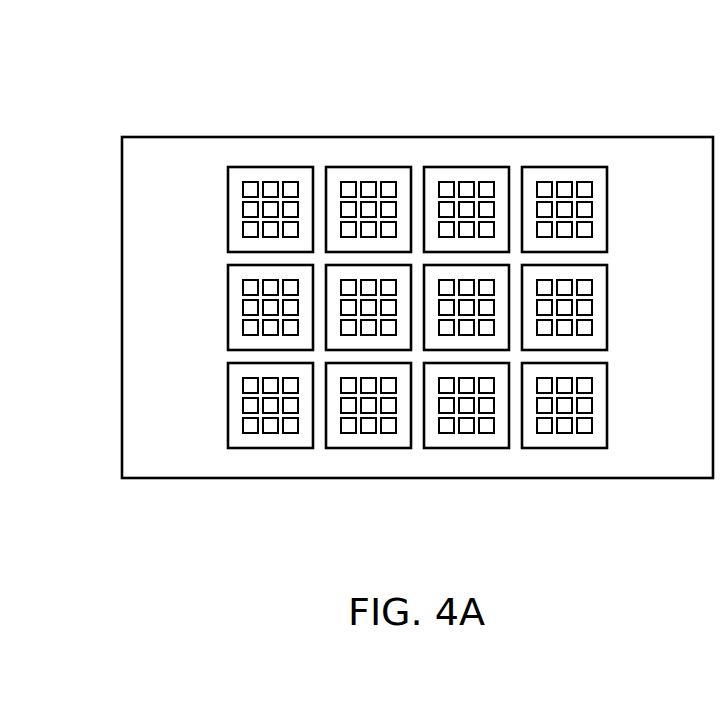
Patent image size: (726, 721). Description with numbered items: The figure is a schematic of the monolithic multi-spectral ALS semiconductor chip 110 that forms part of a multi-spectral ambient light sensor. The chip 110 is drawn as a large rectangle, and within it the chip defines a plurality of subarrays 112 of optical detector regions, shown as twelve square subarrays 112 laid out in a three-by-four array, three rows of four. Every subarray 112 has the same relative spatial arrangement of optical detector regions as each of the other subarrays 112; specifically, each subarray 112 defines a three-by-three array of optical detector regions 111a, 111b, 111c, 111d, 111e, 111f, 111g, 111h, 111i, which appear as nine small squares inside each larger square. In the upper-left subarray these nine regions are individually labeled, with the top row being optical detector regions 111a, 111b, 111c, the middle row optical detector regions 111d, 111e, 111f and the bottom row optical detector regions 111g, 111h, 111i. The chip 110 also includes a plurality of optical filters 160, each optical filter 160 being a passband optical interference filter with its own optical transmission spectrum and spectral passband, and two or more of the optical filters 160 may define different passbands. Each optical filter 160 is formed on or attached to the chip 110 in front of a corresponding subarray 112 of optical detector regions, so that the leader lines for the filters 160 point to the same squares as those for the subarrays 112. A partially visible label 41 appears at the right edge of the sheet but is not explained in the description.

The monolithic multi-spectral ALS semiconductor chip 110 is at (122, 457).
The subarray 112 is at (268, 155).
The optical filter 160 is at (498, 167).
The optical detector region 111a is at (250, 190).
The optical detector region 111b is at (271, 189).
The optical detector region 111c is at (291, 190).
The optical detector region 111d is at (250, 210).
The optical detector region 111e is at (270, 210).
The optical detector region 111f is at (292, 210).
The optical detector region 111g is at (250, 230).
The optical detector region 111h is at (272, 229).
The optical detector region 111i is at (297, 230).
The display region 41 is at (714, 528).